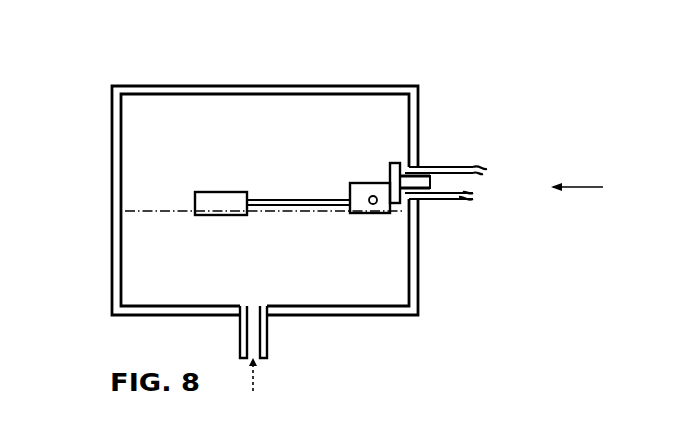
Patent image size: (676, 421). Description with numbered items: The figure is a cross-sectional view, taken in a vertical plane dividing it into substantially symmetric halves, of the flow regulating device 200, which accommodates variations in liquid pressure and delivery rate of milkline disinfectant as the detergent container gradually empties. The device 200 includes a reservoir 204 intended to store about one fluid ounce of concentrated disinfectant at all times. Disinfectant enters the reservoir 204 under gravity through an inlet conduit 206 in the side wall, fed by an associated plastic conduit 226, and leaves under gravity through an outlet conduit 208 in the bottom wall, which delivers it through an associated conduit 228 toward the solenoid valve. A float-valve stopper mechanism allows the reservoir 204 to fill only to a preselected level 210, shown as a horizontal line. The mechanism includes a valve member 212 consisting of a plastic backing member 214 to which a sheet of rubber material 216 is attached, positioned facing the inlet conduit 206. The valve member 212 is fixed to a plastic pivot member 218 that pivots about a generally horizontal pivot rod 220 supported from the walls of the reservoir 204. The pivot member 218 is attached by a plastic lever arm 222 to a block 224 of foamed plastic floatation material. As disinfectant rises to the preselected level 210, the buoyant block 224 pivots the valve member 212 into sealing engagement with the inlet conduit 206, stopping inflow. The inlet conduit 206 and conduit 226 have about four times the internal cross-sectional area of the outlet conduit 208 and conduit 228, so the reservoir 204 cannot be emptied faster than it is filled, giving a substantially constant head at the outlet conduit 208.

The flow regulating device 200 is at (121, 63).
The reservoir 204 is at (112, 160).
The inlet conduit 206 is at (431, 177).
The outlet conduit 208 is at (247, 342).
The preselected level 210 is at (148, 216).
The valve member 212 is at (390, 138).
The plastic backing member 214 is at (388, 164).
The sheet of rubber material 216 is at (401, 160).
The plastic pivot member 218 is at (365, 214).
The pivot rod 220 is at (374, 204).
The plastic lever arm 222 is at (309, 199).
The block of foamed plastic floatation material 224 is at (221, 191).
The plastic conduit 226 is at (553, 176).
The conduit 228 is at (269, 346).